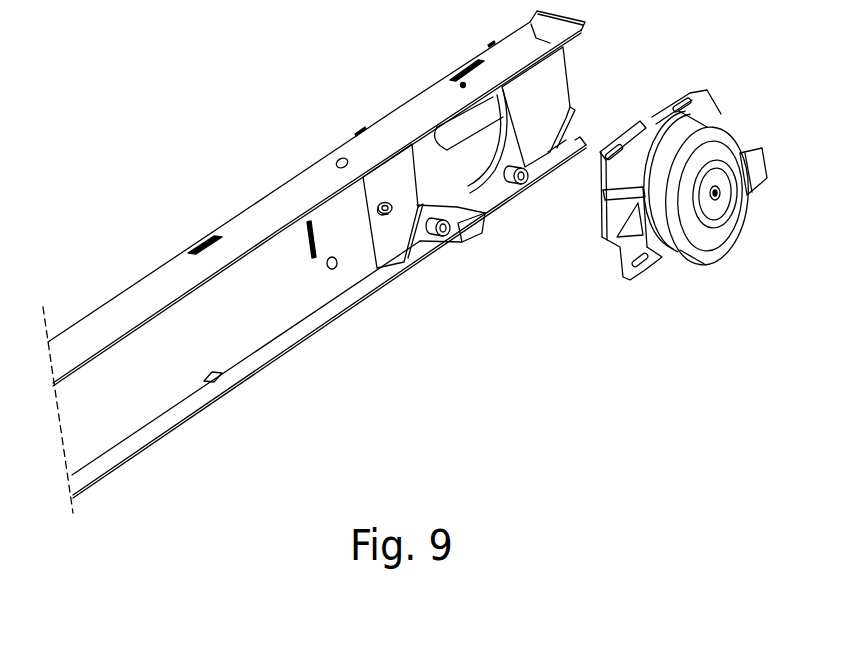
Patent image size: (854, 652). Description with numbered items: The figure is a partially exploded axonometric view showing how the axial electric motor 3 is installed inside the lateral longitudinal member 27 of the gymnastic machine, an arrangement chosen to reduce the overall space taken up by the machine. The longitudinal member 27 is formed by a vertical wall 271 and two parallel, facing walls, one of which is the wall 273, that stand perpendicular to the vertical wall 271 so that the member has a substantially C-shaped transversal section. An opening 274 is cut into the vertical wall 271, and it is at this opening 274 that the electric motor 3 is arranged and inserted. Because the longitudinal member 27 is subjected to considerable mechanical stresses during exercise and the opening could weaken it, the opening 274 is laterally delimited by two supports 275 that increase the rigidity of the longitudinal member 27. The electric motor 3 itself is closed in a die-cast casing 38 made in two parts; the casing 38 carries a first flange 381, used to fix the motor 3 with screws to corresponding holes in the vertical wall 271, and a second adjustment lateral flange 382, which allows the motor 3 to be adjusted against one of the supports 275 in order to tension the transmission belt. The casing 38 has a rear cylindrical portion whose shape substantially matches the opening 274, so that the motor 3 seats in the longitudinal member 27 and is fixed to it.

The longitudinal member 27 is at (345, 254).
The vertical wall 271 is at (152, 390).
The wall 273 is at (288, 350).
The opening 274 is at (462, 183).
The support 275 is at (393, 240).
The axial electric motor 3 is at (661, 186).
The die-cast casing 38 is at (713, 242).
The first flange 381 is at (678, 108).
The second adjustment lateral flange 382 is at (610, 236).